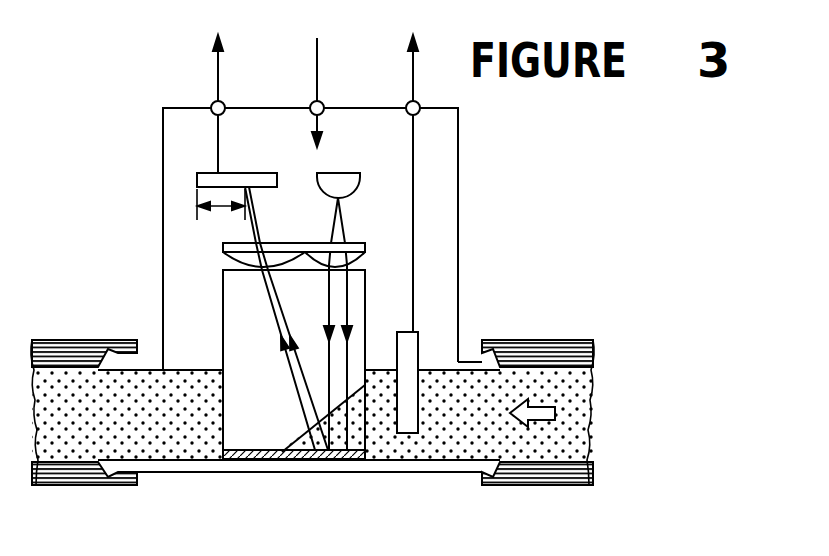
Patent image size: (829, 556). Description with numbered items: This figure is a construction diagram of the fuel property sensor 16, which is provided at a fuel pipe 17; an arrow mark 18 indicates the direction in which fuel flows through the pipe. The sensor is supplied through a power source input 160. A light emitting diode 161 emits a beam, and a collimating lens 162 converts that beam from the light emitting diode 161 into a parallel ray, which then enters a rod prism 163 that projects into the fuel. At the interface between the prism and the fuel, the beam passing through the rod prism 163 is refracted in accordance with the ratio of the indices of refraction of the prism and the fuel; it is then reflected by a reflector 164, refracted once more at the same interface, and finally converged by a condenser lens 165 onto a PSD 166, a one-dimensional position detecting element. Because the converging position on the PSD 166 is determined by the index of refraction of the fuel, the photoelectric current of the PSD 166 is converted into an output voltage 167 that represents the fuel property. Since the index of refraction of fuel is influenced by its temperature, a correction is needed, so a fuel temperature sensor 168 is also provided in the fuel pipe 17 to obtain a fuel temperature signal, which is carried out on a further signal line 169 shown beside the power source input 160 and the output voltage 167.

The fuel property sensor 16 is at (459, 218).
The fuel pipe 17 is at (571, 340).
The arrow mark 18 is at (542, 422).
The power source input 160 is at (318, 76).
The light emitting diode 161 is at (338, 173).
The collimating lens 162 is at (351, 251).
The rod prism 163 is at (233, 306).
The reflector 164 is at (281, 459).
The condenser lens 165 is at (284, 252).
The PSD 166 is at (210, 173).
The output voltage 167 is at (219, 80).
The fuel temperature sensor 168 is at (420, 332).
The probe output line 169 is at (412, 80).